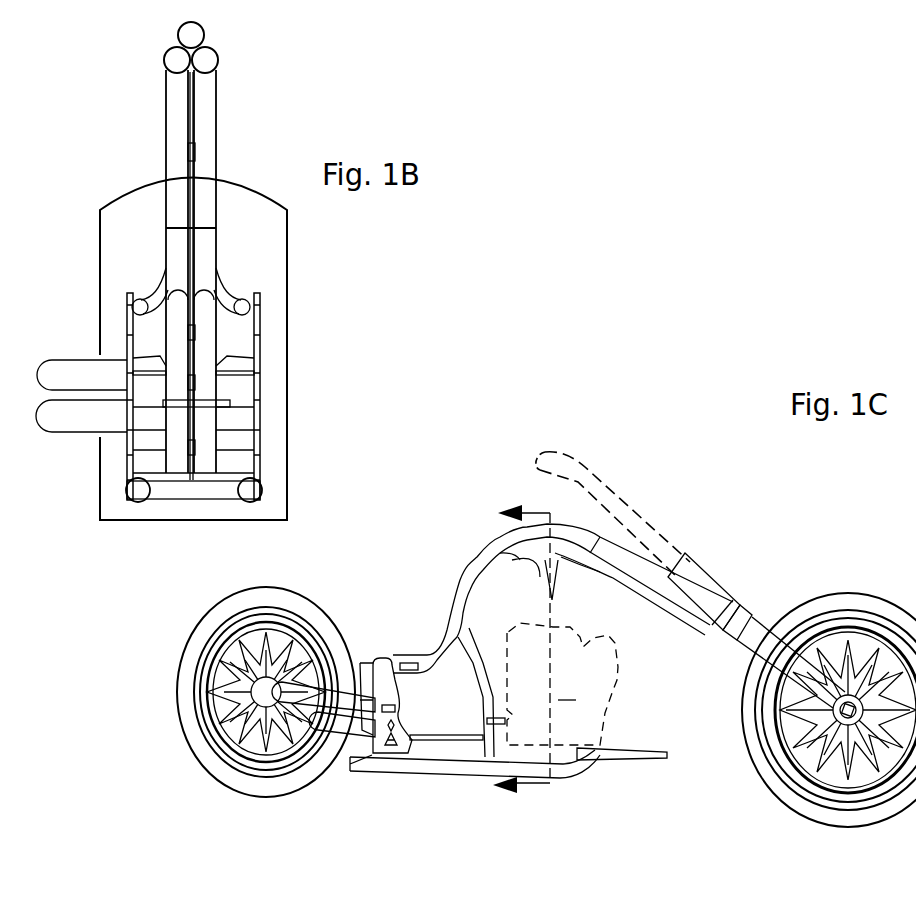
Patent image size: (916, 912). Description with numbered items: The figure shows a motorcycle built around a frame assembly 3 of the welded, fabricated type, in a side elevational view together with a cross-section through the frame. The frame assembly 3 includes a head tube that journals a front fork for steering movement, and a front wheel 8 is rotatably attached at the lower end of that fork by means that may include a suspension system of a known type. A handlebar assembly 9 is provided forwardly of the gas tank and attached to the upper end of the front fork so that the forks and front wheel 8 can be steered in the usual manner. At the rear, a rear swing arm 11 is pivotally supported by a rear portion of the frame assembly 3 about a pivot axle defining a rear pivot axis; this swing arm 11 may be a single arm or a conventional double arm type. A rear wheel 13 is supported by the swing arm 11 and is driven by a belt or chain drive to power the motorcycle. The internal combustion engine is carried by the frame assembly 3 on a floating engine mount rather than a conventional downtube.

In FIG. 1B, the frame assembly 3 is at (230, 33).
In FIG. 1C, the frame assembly 3 is at (440, 562).
In FIG. 1C, the front wheel 8 is at (848, 597).
In FIG. 1C, the handlebar assembly 9 is at (593, 475).
In FIG. 1B, the rear swing arm 11 is at (53, 412).
In FIG. 1C, the rear swing arm 11 is at (340, 680).
In FIG. 1B, the rear wheel 13 is at (140, 215).
In FIG. 1C, the rear wheel 13 is at (190, 641).